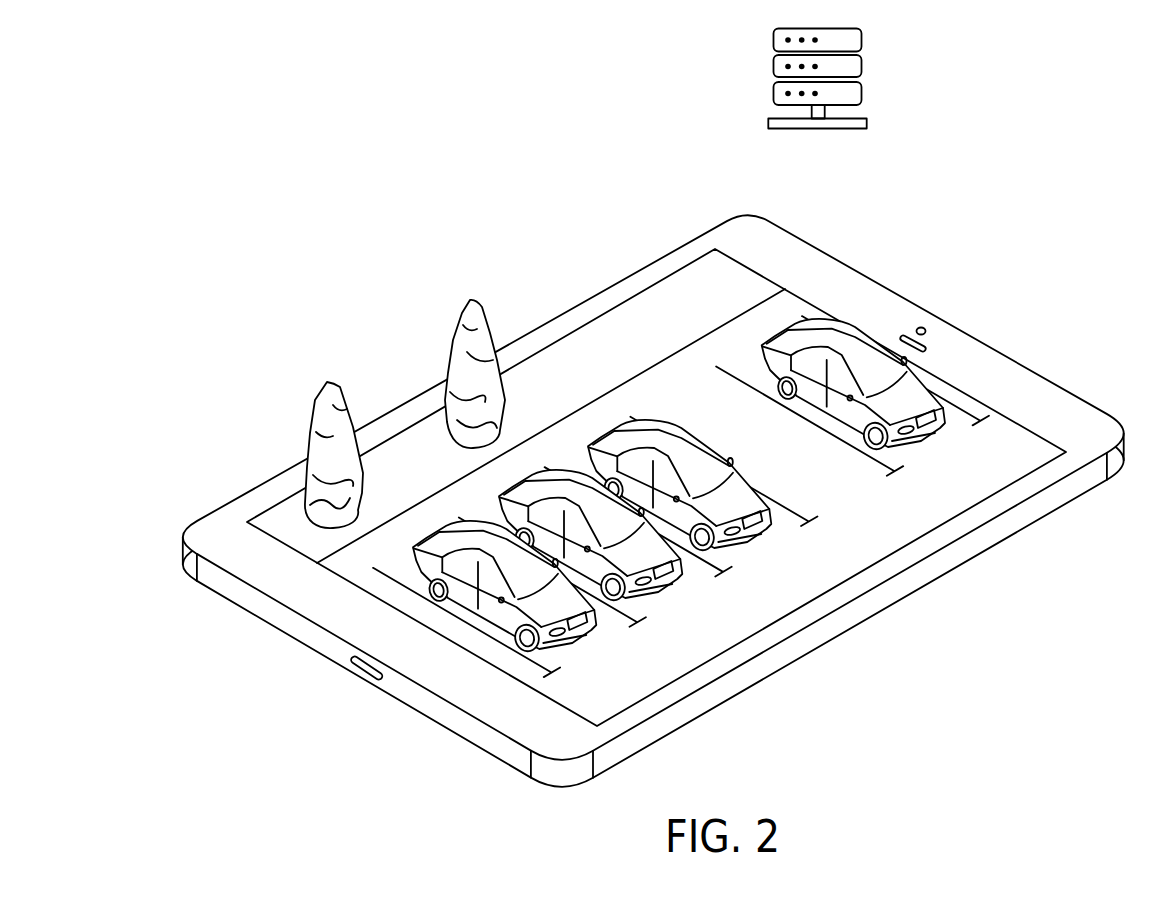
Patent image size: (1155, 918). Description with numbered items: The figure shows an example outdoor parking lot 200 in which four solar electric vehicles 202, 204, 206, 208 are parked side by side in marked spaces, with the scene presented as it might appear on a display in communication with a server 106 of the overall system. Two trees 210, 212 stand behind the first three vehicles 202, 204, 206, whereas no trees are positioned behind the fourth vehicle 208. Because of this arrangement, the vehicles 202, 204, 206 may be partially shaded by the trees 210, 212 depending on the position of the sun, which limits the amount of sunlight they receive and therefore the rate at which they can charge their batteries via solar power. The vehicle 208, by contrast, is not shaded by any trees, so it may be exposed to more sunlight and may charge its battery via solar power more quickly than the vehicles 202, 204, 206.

The server 106 is at (774, 41).
The outdoor parking lot 200 is at (299, 156).
The solar electric vehicle 202 is at (578, 641).
The solar electric vehicle 204 is at (667, 592).
The solar electric vehicle 206 is at (755, 542).
The solar electric vehicle 208 is at (928, 442).
The tree 210 is at (330, 381).
The tree 212 is at (474, 300).